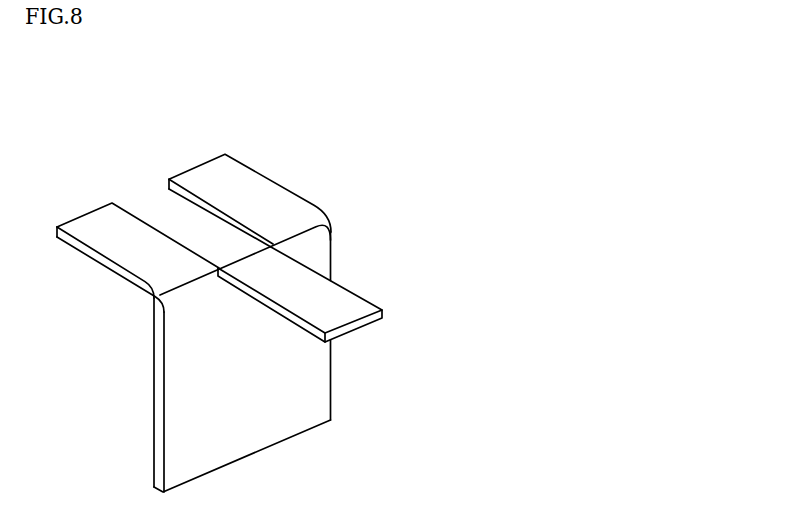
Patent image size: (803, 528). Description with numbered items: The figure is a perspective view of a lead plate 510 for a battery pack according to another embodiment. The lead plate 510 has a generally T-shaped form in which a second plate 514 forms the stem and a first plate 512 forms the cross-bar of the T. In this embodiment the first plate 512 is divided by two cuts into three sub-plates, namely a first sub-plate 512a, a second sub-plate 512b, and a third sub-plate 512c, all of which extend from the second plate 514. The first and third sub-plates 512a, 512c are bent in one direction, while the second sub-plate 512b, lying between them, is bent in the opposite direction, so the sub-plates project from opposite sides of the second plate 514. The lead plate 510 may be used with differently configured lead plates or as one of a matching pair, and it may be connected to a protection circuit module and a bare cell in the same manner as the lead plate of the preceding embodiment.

The lead plate 510 is at (402, 158).
The first plate 512 is at (305, 107).
The first sub-plate 512a is at (111, 204).
The second sub-plate 512b is at (302, 266).
The third sub-plate 512c is at (206, 169).
The second plate 514 is at (248, 443).